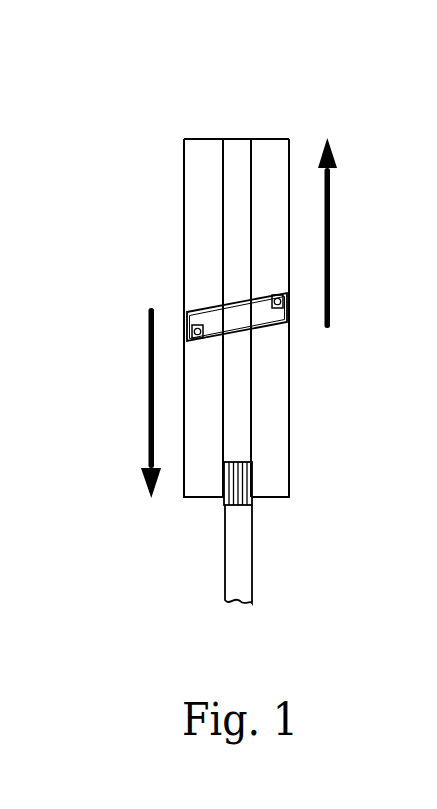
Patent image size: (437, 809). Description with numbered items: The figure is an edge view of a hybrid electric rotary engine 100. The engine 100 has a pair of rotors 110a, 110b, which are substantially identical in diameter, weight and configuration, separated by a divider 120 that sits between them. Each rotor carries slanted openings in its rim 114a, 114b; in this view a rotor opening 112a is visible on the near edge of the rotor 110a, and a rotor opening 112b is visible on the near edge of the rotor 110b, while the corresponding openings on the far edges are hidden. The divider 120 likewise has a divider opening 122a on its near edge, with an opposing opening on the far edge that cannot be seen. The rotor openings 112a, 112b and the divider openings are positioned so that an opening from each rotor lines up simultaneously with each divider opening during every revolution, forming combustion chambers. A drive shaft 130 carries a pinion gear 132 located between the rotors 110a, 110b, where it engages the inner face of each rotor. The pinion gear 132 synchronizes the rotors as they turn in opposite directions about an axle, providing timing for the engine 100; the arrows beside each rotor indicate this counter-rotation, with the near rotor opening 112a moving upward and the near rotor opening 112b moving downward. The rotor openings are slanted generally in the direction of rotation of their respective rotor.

The hybrid electric rotary engine 100 is at (247, 73).
The rotor 110a is at (289, 462).
The rotor 110b is at (184, 185).
The rotor opening 112a is at (281, 325).
The rotor opening 112b is at (197, 309).
The rim 114a is at (272, 138).
The rim 114b is at (203, 138).
The divider 120 is at (238, 138).
The divider opening 122a is at (238, 303).
The drive shaft 130 is at (225, 583).
The pinion gear 132 is at (244, 503).